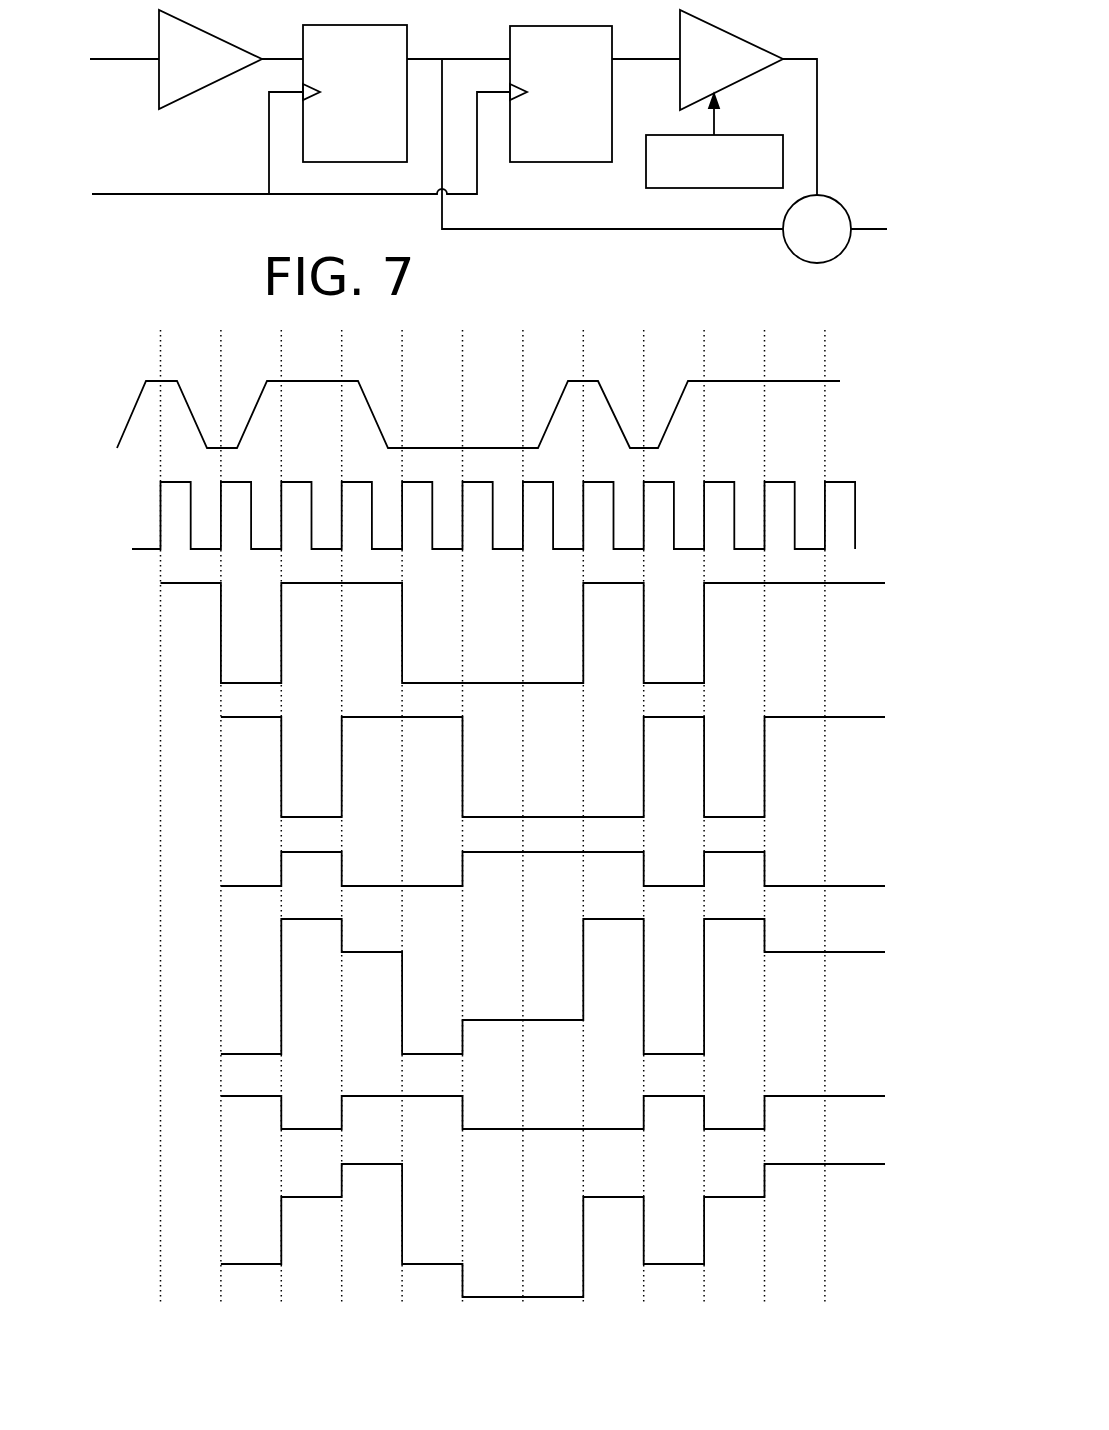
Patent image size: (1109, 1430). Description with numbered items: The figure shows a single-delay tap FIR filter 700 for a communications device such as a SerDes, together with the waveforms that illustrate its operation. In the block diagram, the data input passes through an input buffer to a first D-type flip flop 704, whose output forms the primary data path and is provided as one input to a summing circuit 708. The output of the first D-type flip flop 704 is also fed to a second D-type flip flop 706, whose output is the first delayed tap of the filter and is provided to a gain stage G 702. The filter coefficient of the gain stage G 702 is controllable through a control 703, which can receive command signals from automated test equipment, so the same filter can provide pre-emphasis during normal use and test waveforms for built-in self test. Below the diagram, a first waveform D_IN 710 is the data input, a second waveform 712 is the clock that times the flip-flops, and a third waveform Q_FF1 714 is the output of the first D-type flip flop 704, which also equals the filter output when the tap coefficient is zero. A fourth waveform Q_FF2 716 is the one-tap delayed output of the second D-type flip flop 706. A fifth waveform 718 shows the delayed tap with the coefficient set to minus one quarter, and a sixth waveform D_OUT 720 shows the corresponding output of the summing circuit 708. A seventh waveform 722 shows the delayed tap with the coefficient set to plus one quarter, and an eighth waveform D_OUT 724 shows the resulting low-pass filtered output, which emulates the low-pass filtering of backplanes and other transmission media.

The single-delay tap FIR filter 700 is at (168, 232).
The gain stage G 702 is at (745, 33).
The control 703 is at (732, 135).
The first D-type flip flop 704 is at (313, 162).
The second D-type flip flop 706 is at (527, 162).
The summing circuit 708 is at (810, 263).
The first waveform D_IN 710 is at (140, 394).
The second waveform 712 is at (175, 482).
The third waveform Q_FF1 714 is at (170, 583).
The fourth waveform Q_FF2 716 is at (232, 717).
The fifth waveform 718 is at (223, 886).
The sixth waveform D_OUT 720 is at (223, 1054).
The seventh waveform 722 is at (222, 1096).
The eighth waveform D_OUT 724 is at (222, 1264).